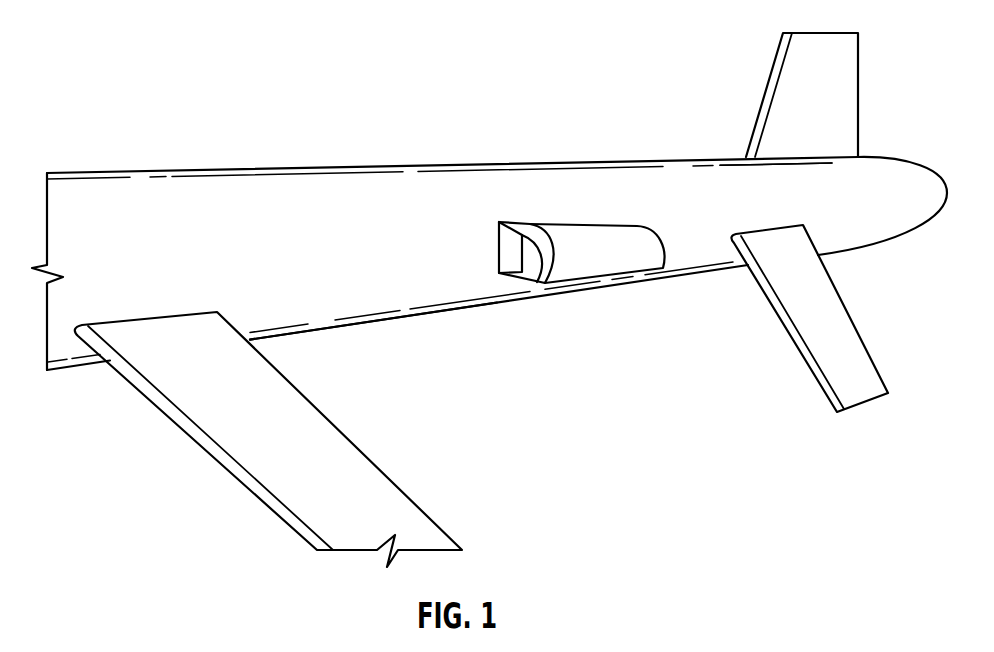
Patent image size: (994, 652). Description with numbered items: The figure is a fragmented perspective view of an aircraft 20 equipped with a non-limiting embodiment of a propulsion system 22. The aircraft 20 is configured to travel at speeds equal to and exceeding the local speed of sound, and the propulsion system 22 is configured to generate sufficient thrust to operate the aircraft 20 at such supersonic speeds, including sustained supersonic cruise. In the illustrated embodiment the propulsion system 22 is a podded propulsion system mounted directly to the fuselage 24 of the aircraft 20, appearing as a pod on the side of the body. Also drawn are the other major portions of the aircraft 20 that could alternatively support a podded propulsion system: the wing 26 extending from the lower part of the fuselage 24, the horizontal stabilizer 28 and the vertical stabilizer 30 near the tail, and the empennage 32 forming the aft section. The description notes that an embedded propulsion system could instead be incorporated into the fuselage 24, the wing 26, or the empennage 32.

The aircraft 20 is at (115, 111).
The propulsion system 22 is at (572, 223).
The fuselage 24 is at (443, 273).
The wing 26 is at (280, 407).
The horizontal stabilizer 28 is at (778, 295).
The vertical stabilizer 30 is at (785, 99).
The empennage 32 is at (742, 184).